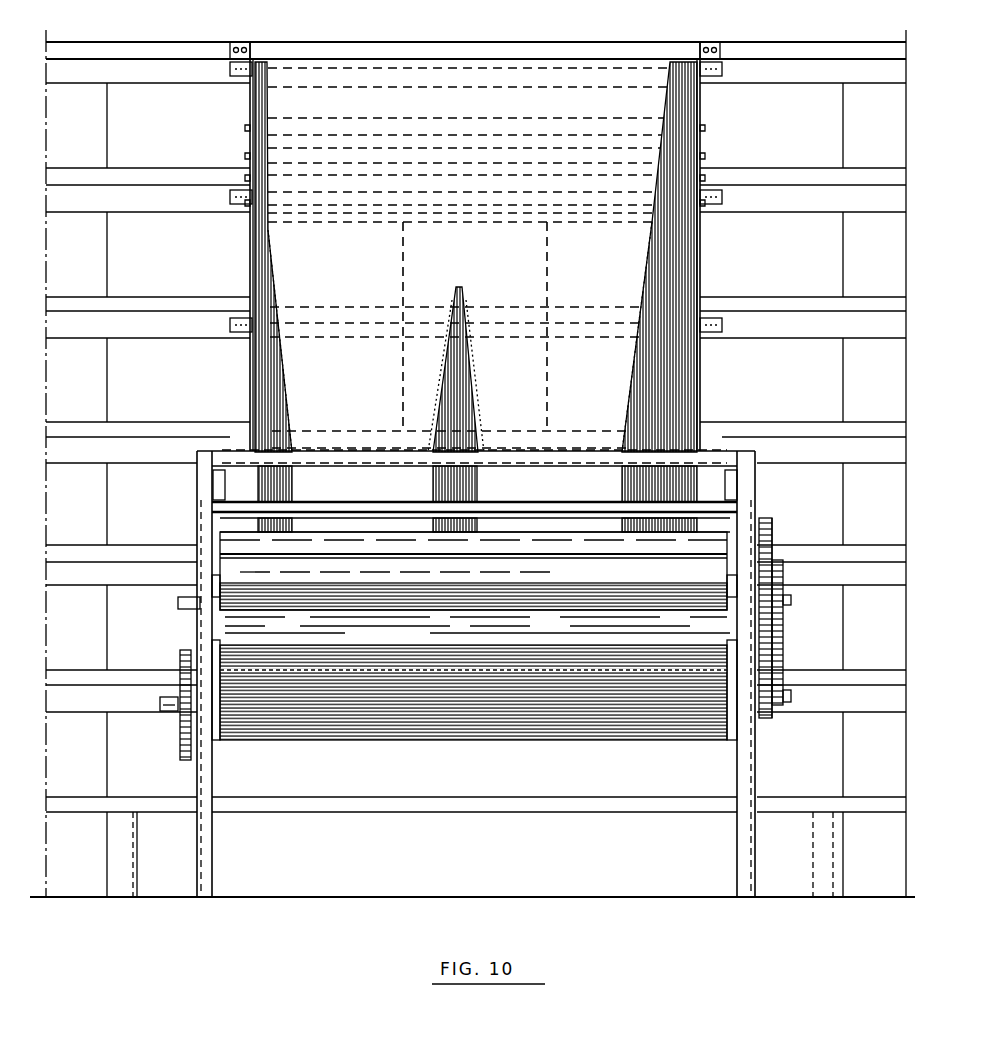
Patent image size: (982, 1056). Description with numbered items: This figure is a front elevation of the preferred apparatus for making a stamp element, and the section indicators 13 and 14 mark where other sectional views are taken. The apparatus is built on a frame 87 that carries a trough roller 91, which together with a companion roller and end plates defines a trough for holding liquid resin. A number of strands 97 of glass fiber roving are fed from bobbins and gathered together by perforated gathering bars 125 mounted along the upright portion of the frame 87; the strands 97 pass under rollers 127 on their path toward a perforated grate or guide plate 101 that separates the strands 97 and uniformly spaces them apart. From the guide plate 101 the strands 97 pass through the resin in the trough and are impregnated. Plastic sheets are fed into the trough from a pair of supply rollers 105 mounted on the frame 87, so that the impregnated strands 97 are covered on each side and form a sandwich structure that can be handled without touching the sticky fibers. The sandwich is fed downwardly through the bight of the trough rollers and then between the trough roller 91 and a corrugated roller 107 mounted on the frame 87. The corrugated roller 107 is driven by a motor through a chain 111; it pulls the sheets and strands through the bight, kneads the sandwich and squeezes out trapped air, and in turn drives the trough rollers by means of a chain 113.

The frame 87 is at (212, 762).
The trough roller 91 is at (488, 651).
The strands 97 is at (493, 276).
The guide plate 101 is at (577, 465).
The supply rollers 105 is at (316, 600).
The corrugated roller 107 is at (460, 725).
The chain 111 is at (177, 740).
The chain 113 is at (780, 540).
The gathering bars 125 is at (716, 78).
The rollers 127 is at (358, 306).
The section line 13- 13 is at (702, 388).
The section line 14- 14 is at (212, 115).